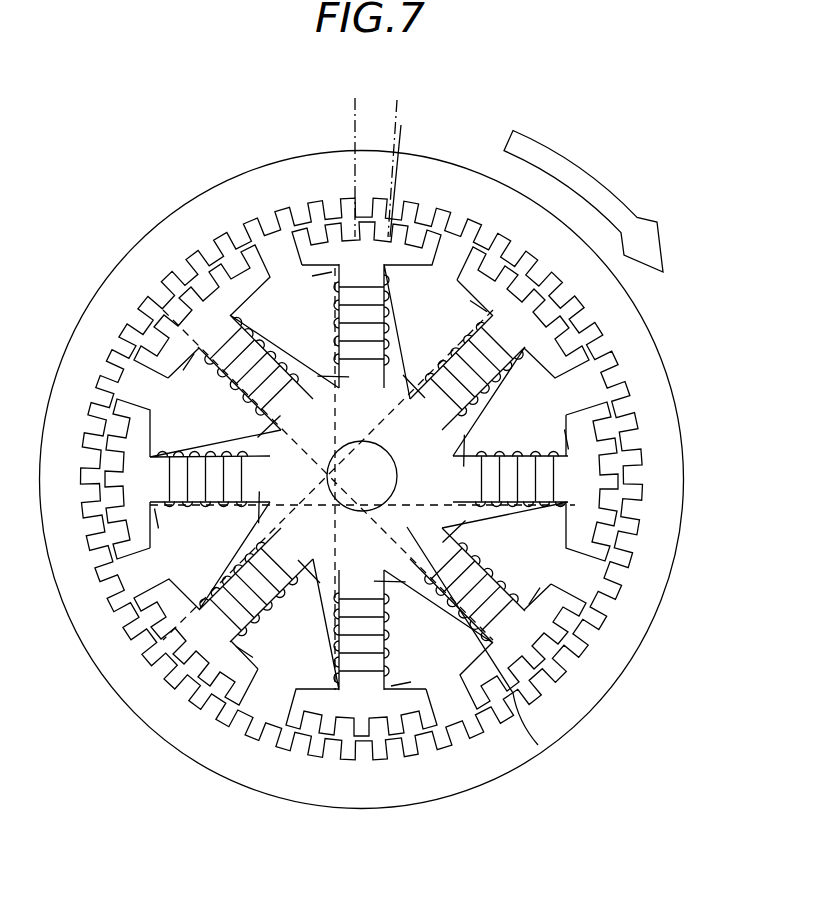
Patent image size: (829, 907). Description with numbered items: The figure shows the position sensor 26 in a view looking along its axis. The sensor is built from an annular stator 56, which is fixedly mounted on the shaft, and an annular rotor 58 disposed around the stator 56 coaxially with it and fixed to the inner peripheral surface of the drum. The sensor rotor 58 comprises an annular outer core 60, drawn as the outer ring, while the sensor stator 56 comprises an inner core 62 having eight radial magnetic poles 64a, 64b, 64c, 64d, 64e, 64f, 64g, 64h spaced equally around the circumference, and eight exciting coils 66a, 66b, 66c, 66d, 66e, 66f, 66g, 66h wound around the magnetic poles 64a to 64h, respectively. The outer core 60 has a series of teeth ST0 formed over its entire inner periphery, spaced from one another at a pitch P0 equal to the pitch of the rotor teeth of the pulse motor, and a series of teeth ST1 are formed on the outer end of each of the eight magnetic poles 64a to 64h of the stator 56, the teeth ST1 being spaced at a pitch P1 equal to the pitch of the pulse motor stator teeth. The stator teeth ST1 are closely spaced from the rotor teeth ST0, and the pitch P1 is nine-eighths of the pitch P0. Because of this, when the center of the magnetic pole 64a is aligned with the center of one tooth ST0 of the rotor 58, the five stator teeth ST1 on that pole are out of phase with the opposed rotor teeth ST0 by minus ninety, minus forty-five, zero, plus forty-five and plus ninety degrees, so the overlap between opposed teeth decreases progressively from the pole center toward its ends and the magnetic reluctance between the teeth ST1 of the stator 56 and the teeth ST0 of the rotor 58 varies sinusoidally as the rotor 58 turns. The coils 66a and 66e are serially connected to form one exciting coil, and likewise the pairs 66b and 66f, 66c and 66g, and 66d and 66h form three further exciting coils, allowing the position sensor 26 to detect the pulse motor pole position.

The position sensor 26 is at (605, 160).
The annular stator 56 is at (325, 400).
The annular rotor 58 is at (82, 310).
The annular outer core 60 is at (635, 628).
The inner core 62 is at (538, 745).
The radial magnetic pole 64a is at (415, 262).
The radial magnetic pole 64b is at (547, 348).
The radial magnetic pole 64c is at (575, 547).
The radial magnetic pole 64d is at (480, 668).
The radial magnetic pole 64e is at (306, 697).
The radial magnetic pole 64f is at (195, 594).
The radial magnetic pole 64g is at (158, 418).
The radial magnetic pole 64h is at (257, 277).
The exciting coil 66a is at (387, 345).
The exciting coil 66b is at (487, 388).
The exciting coil 66c is at (497, 505).
The exciting coil 66d is at (468, 620).
The exciting coil 66e is at (335, 638).
The exciting coil 66f is at (238, 572).
The exciting coil 66g is at (196, 456).
The exciting coil 66h is at (273, 360).
The rotor teeth ST0 is at (428, 215).
The stator teeth ST1 is at (297, 227).
The pitch of the rotor teeth P0 is at (355, 106).
The pitch of the stator teeth P1 is at (355, 132).